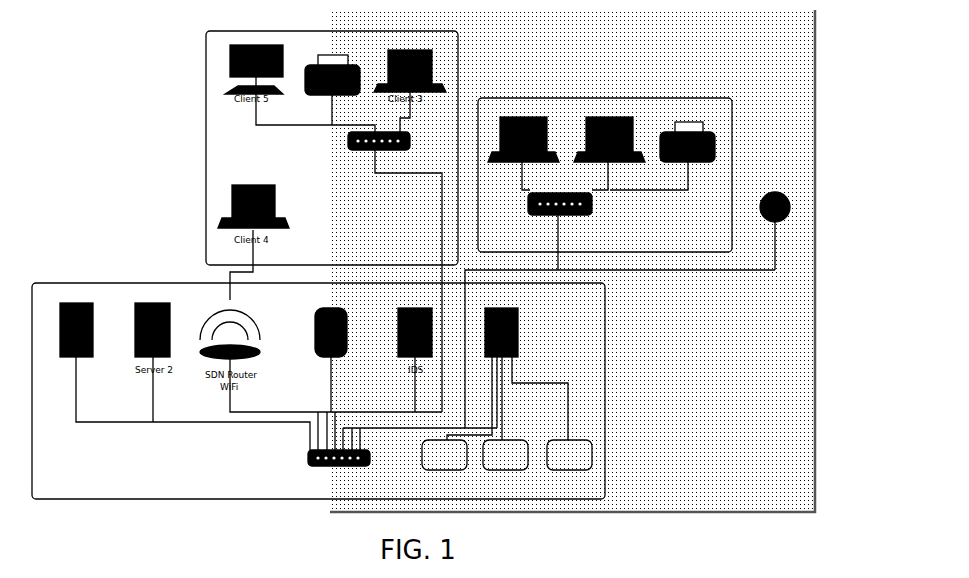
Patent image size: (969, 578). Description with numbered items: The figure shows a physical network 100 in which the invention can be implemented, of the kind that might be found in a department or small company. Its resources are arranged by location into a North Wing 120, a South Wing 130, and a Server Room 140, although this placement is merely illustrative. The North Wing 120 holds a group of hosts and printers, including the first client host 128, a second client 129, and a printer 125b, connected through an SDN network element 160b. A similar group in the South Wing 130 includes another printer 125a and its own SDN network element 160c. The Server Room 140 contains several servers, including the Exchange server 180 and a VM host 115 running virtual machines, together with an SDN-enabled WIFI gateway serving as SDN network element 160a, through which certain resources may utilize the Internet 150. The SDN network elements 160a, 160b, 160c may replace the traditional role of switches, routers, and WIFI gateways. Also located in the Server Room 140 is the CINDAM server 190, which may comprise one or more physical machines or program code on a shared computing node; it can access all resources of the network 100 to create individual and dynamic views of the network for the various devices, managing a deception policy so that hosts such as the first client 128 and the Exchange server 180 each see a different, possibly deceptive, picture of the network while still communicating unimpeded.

The network 100 is at (695, 43).
The South Wing 130 is at (332, 148).
The printer 125a is at (332, 93).
The SDN network element 160c is at (362, 161).
The North Wing 120 is at (605, 175).
The Client-1 128 is at (523, 161).
The client 2 129 is at (610, 161).
The printer 125b is at (662, 163).
The SDN network element 160b is at (584, 217).
The Internet 150 is at (776, 216).
The Server Room 140 is at (318, 391).
The CINDAM server 190 is at (327, 340).
The Exchange server 180 is at (76, 351).
The VM host 115 is at (507, 389).
The SDN network element 160a is at (325, 476).